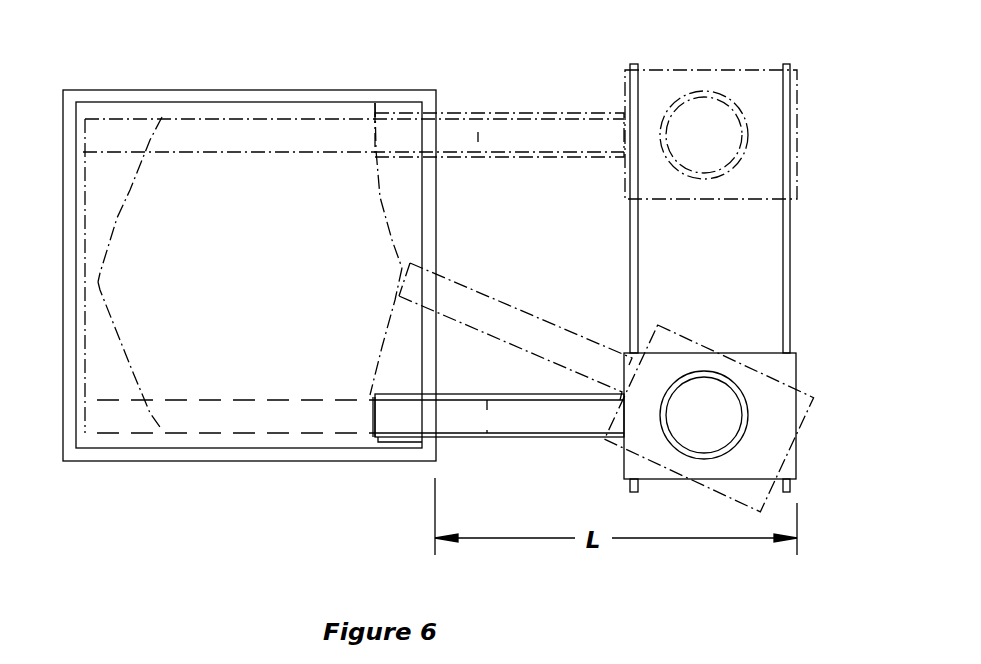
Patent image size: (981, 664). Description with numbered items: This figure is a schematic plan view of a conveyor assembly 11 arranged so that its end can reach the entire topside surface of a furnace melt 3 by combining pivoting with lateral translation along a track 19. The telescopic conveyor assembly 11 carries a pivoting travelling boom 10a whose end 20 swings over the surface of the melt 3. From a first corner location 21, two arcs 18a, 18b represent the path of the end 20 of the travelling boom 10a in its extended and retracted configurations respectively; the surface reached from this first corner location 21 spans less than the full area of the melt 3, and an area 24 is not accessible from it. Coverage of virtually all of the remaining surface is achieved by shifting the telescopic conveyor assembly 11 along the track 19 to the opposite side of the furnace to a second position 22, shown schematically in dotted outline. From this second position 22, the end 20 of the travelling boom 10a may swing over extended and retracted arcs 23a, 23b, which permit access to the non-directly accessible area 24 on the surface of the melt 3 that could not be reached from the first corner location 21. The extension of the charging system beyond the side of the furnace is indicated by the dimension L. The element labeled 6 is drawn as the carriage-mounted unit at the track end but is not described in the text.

The silica melt 3 is at (232, 220).
The cutting box 6 is at (800, 466).
The pivoting travelling boom 10a is at (223, 432).
The conveyor assembly 11 is at (517, 412).
The extended arc 18a is at (118, 219).
The retracted arc 18b is at (385, 323).
The track 19 is at (790, 218).
The end of the travelling boom 20 is at (375, 412).
The first corner location 21 is at (703, 418).
The second position 22 is at (700, 133).
The extended arc 23a is at (133, 370).
The retracted arc 23b is at (381, 206).
The non-directly accessible area 24 is at (108, 133).